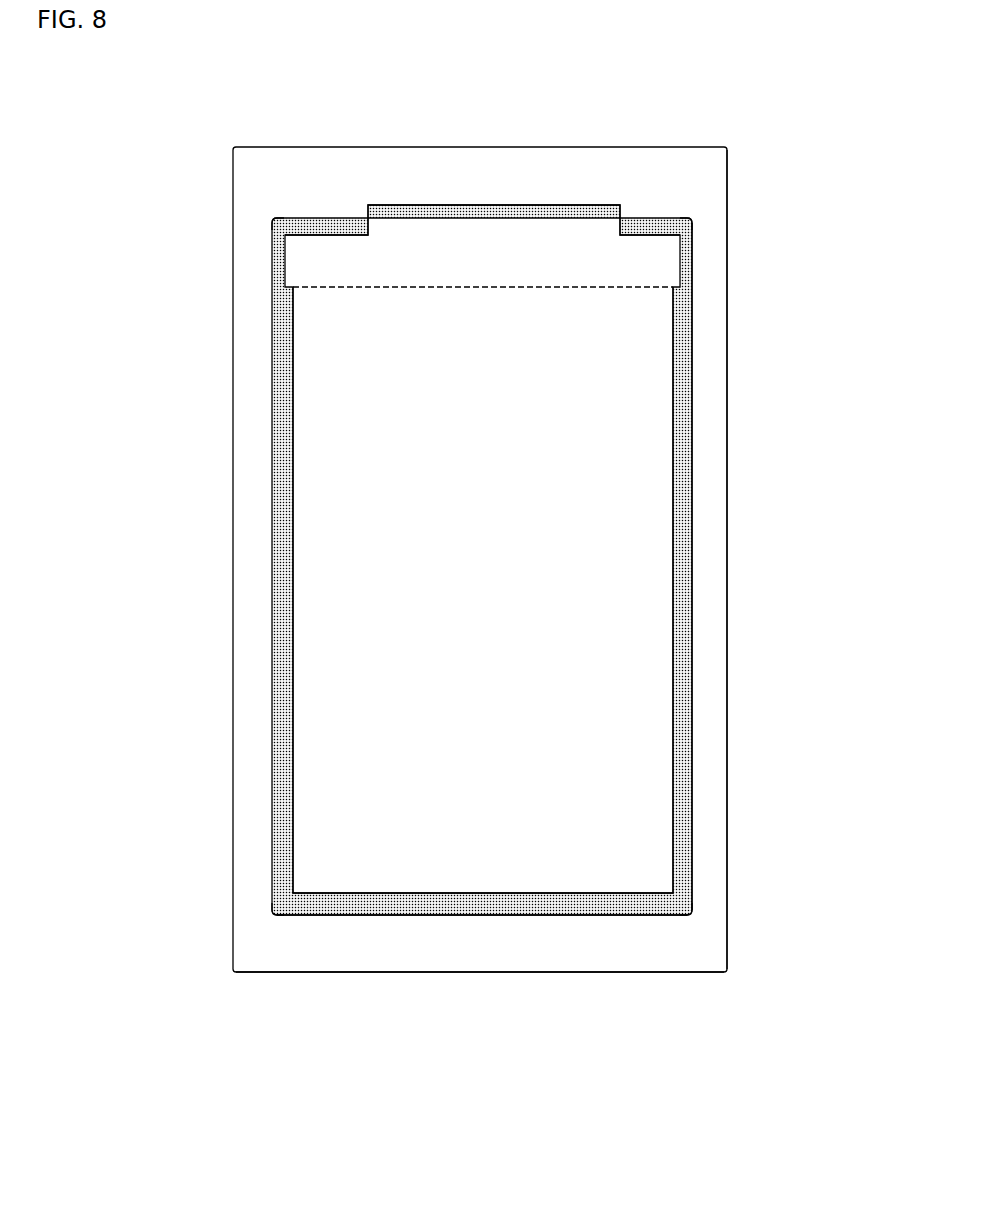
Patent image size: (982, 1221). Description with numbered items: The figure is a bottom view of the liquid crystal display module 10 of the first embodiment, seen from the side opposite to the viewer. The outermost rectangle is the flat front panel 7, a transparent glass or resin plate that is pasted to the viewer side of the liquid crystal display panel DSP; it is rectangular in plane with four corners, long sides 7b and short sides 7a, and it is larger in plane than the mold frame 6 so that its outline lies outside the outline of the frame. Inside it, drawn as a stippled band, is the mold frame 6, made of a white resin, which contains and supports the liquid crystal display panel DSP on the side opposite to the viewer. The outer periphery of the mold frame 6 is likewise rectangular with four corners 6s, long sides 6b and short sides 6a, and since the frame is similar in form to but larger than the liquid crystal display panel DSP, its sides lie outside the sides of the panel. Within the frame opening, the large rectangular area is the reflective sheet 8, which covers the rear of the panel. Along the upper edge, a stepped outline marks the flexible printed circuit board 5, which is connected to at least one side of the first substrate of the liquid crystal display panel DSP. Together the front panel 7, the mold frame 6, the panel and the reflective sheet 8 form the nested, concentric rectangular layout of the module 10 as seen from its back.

The liquid crystal display module 10 is at (712, 134).
The front panel 7 is at (713, 525).
The short sides 7a is at (436, 973).
The long sides 7b is at (728, 437).
The mold frame 6 is at (683, 690).
The short sides 6a is at (400, 913).
The long sides 6b is at (693, 388).
The corners 6s is at (276, 216).
The flexible printed circuit board 5 is at (540, 222).
The reflective sheet 8 is at (328, 515).
The liquid crystal display panel DSP is at (292, 440).